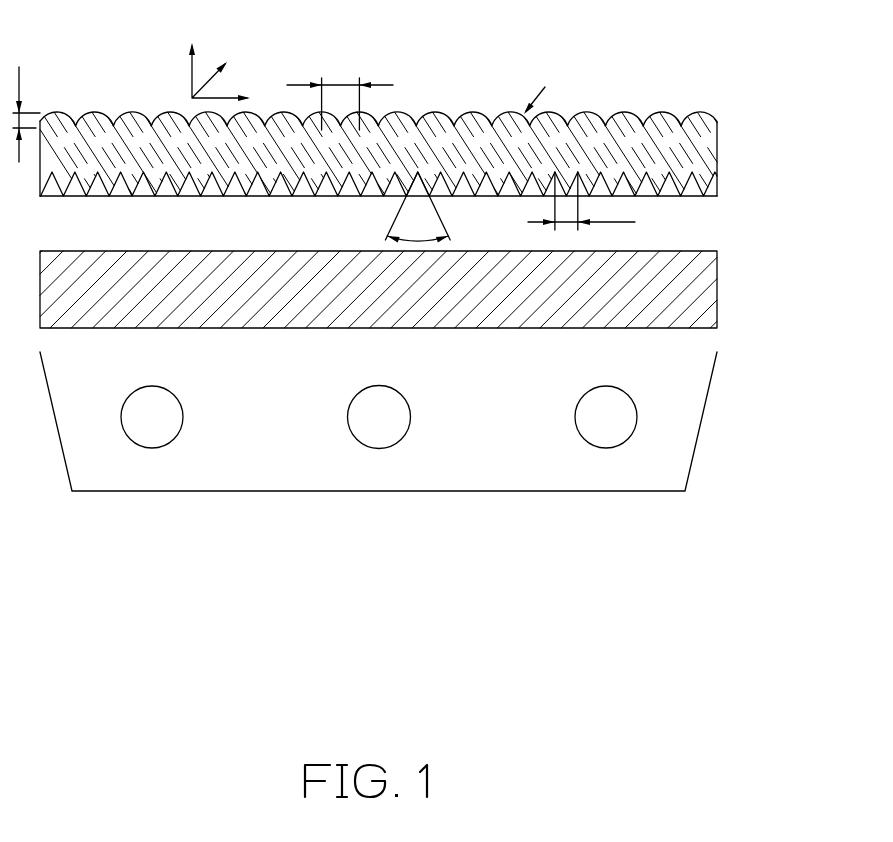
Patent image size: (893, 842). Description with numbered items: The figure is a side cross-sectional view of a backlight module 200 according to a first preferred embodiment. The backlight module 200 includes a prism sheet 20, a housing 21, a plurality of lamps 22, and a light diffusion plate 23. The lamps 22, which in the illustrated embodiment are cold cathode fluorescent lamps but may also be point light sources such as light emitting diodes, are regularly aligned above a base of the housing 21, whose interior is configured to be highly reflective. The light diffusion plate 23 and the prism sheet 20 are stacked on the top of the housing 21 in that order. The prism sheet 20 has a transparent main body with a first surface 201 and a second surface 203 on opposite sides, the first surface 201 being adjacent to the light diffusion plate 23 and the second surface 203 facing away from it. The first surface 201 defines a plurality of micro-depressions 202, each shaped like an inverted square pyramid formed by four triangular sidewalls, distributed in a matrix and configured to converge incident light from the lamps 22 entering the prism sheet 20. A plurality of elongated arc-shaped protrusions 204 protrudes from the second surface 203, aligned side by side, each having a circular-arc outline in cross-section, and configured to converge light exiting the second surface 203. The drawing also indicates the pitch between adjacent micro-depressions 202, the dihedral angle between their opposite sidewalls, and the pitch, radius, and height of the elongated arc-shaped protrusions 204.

The backlight module 200 is at (461, 42).
The prism sheet 20 is at (726, 152).
The first surface 201 is at (212, 200).
The micro-depressions 202 is at (693, 188).
The second surface 203 is at (720, 116).
The elongated arc-shaped protrusions 204 is at (658, 118).
The light diffusion plate 23 is at (707, 293).
The housing 21 is at (705, 400).
The lamps 22 is at (612, 433).